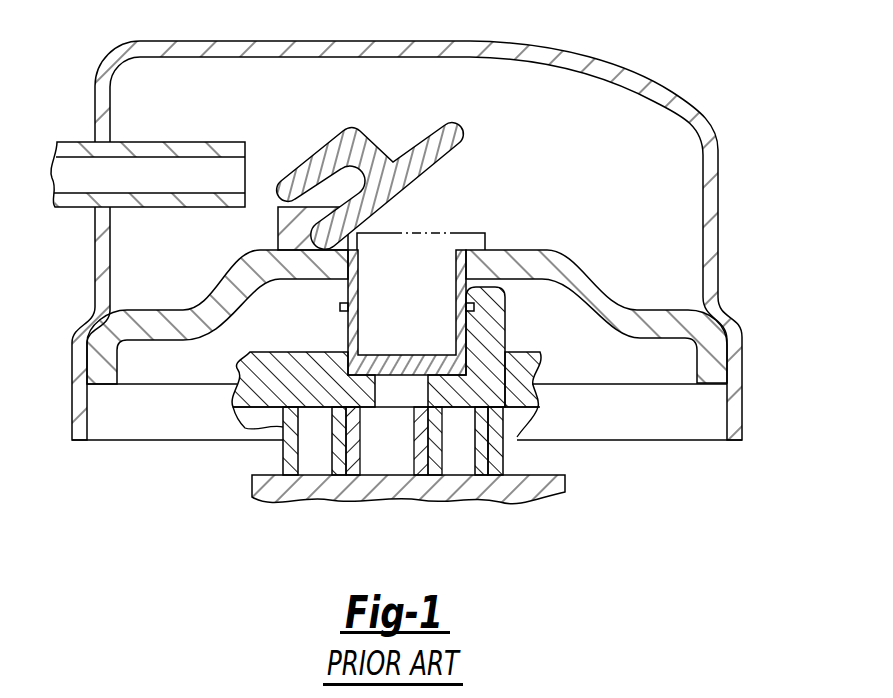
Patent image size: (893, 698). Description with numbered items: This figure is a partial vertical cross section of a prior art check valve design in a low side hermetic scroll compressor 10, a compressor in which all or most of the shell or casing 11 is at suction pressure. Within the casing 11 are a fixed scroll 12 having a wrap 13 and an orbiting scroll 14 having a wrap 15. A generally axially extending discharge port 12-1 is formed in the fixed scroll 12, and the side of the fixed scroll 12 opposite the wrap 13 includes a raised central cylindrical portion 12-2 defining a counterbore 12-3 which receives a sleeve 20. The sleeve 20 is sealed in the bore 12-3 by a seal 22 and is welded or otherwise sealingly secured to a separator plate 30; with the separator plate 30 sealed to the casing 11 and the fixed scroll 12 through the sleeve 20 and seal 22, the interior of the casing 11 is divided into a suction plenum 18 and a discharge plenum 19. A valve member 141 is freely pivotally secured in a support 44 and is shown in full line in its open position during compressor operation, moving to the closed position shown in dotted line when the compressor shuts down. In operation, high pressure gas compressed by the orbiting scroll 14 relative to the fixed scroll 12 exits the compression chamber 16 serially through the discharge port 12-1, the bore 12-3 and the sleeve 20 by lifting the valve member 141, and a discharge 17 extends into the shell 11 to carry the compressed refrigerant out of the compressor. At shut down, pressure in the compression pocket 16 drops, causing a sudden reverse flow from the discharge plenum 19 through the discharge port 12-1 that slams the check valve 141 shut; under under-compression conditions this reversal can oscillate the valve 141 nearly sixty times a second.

The low side hermetic scroll compressor 10 is at (656, 68).
The shell or casing 11 is at (728, 318).
The fixed scroll 12 is at (530, 425).
The discharge port 12-1 is at (378, 393).
The raised central cylindrical portion 12-2 is at (506, 326).
The counterbore 12-3 is at (362, 362).
The wrap 13 is at (483, 468).
The orbiting scroll 14 is at (357, 488).
The wrap 15 is at (332, 448).
The compression chamber 16 is at (400, 451).
The discharge 17 is at (197, 146).
The suction plenum 18 is at (187, 375).
The discharge plenum 19 is at (169, 278).
The sleeve 20 is at (360, 316).
The seal 22 is at (349, 306).
The separator plate 30 is at (596, 279).
The support 44 is at (278, 240).
The valve member 141 is at (456, 127).